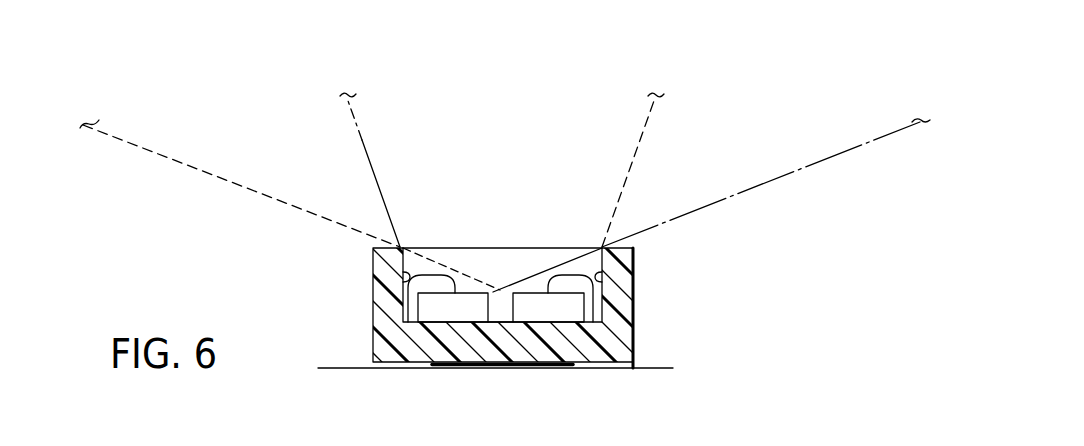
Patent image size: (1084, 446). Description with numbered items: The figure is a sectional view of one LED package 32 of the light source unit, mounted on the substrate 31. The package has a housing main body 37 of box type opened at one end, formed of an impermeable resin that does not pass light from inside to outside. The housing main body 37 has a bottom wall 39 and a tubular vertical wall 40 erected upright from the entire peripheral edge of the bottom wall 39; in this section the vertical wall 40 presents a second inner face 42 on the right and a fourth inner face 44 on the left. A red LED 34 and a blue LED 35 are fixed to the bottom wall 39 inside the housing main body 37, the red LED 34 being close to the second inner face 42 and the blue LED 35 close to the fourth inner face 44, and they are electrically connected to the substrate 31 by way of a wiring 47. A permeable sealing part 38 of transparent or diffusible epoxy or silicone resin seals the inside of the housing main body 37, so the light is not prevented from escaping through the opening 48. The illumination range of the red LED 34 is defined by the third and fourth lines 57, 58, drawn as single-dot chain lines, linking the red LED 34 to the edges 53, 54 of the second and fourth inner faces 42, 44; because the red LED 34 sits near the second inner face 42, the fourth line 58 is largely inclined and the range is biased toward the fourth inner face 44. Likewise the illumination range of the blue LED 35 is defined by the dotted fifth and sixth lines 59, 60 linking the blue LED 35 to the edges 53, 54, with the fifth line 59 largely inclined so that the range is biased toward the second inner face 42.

The substrate 31 is at (340, 384).
The LED package 32 is at (516, 230).
The red LED 34 is at (448, 312).
The blue LED 35 is at (565, 312).
The housing main body 37 is at (642, 323).
The sealing part 38 is at (498, 282).
The bottom wall 39 is at (506, 325).
The vertical wall 40 is at (372, 259).
The second inner face 42 is at (401, 283).
The fourth inner face 44 is at (600, 279).
The wiring 47 is at (413, 278).
The opening 48 is at (573, 256).
The edge of the second inner face 53 is at (401, 246).
The edge of the fourth inner face 54 is at (602, 246).
The third line 57 is at (362, 140).
The fourth line 58 is at (787, 173).
The fifth line 59 is at (170, 157).
The sixth line 60 is at (647, 130).